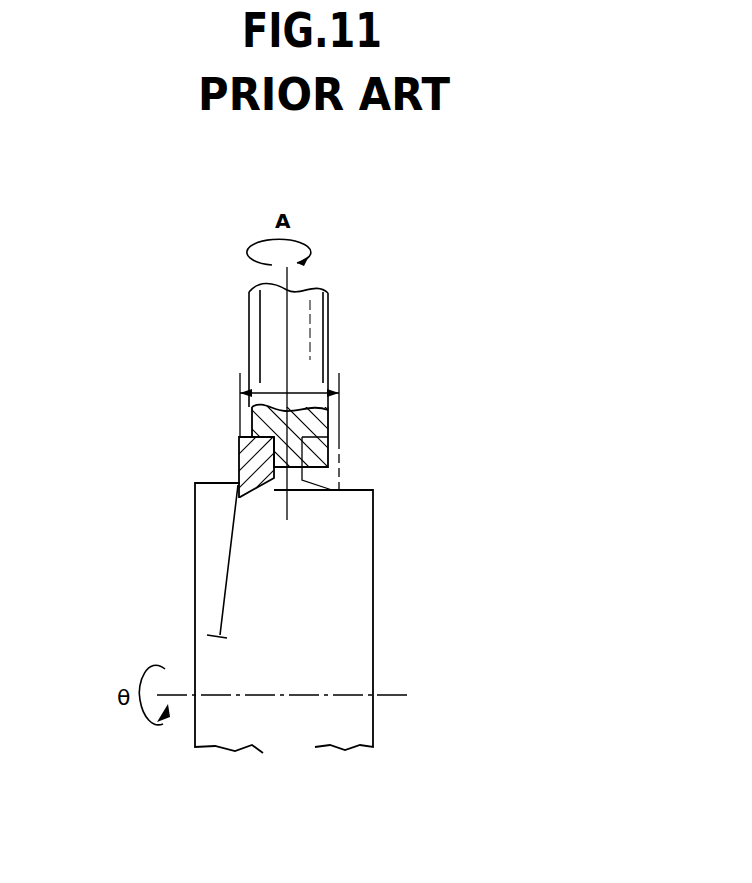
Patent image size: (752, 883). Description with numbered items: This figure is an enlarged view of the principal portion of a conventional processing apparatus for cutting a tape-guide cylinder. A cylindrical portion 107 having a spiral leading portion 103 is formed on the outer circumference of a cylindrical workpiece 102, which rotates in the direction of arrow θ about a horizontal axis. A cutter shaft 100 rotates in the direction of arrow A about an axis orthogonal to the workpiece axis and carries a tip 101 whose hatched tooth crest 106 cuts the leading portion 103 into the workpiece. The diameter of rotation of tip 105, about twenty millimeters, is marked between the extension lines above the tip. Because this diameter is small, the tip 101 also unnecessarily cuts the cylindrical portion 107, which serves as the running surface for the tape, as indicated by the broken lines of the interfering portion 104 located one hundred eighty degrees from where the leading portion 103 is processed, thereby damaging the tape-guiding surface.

The cutter shaft 100 is at (318, 316).
The tip 101 is at (238, 447).
The workpiece 102 is at (357, 665).
The leading portion 103 is at (228, 573).
The interfering portion 104 is at (332, 490).
The diameter of rotation of tip 105 is at (302, 393).
The tooth crest 106 is at (237, 472).
The cylindrical portion 107 is at (362, 488).